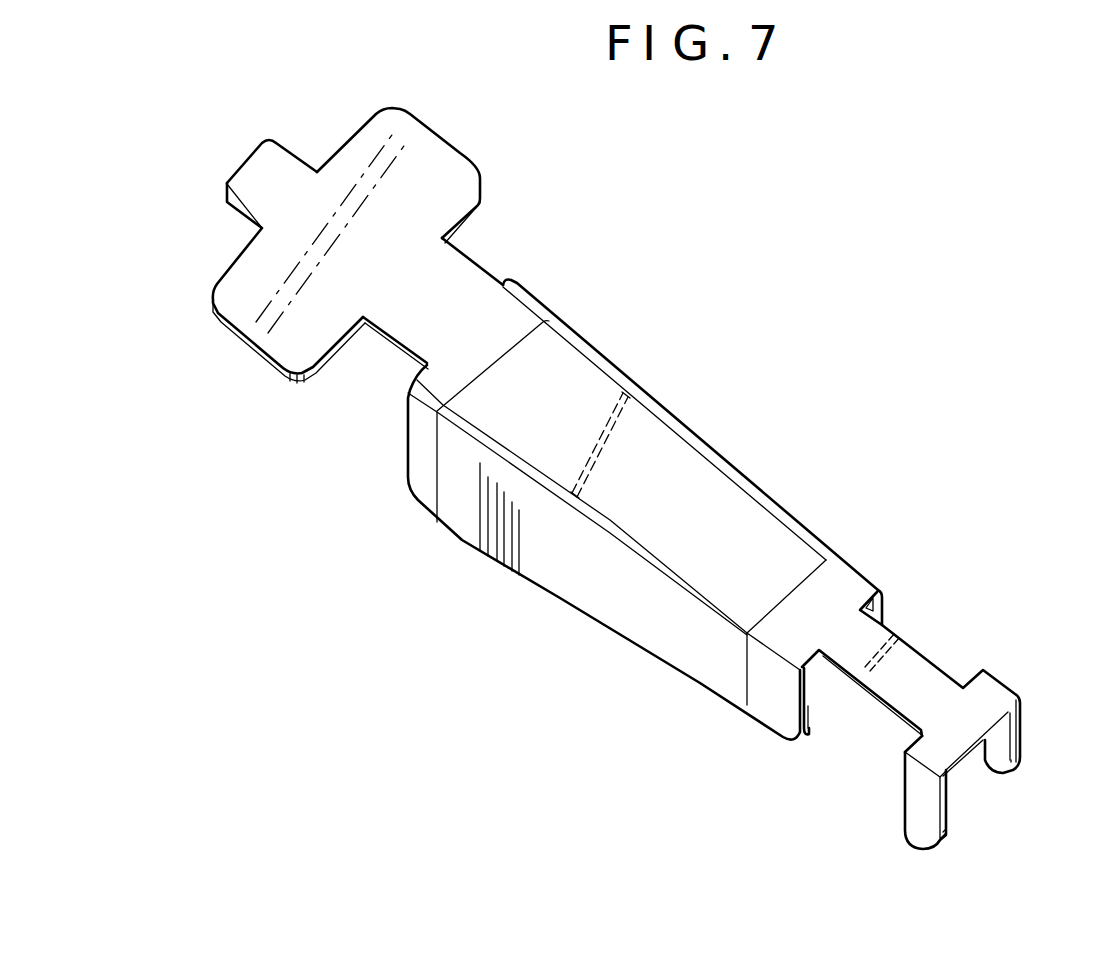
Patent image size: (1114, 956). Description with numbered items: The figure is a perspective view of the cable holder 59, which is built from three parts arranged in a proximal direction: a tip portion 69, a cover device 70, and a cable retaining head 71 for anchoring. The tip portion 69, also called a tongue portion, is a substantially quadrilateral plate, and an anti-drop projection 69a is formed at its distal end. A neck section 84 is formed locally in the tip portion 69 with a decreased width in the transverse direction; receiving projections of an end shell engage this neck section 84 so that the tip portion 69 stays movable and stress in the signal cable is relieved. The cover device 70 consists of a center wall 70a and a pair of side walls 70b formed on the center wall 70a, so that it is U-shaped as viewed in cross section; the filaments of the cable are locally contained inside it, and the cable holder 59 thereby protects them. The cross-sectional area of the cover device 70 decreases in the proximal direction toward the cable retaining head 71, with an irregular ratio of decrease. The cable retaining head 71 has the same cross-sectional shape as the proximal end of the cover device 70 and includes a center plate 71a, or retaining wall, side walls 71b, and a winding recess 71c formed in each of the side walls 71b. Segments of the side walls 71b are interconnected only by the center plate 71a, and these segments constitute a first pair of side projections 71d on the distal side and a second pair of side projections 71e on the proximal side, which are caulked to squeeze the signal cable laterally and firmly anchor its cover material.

The cable holder 59 is at (848, 383).
The tip portion 69 is at (461, 138).
The anti-drop projection 69a is at (250, 158).
The neck section 84 is at (445, 298).
The cover device 70 is at (614, 355).
The center wall 70a is at (652, 487).
The side walls 70b is at (772, 494).
The cable retaining head 71 is at (915, 642).
The center plate 71a is at (917, 697).
The side walls 71b is at (1020, 748).
The winding recess 71c is at (968, 690).
The first pair of side projections 71d is at (777, 703).
The second pair of side projections 71e is at (908, 812).